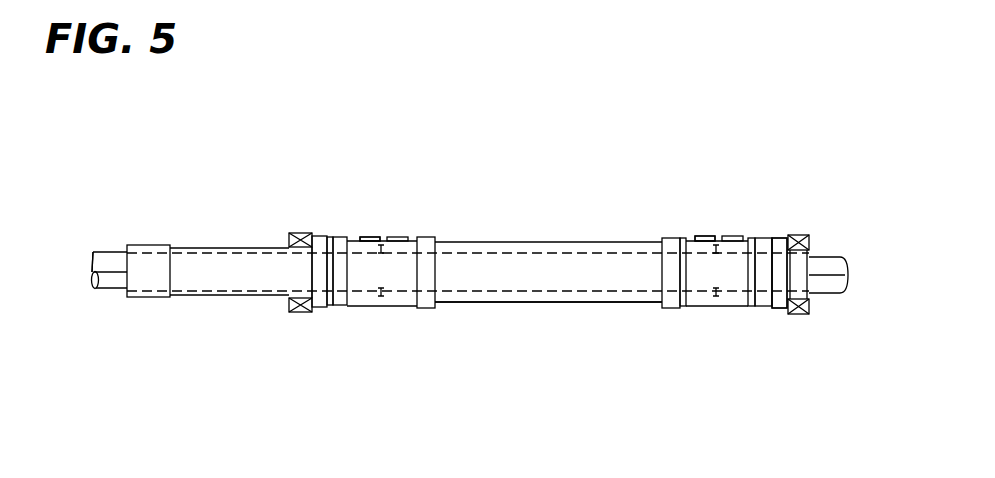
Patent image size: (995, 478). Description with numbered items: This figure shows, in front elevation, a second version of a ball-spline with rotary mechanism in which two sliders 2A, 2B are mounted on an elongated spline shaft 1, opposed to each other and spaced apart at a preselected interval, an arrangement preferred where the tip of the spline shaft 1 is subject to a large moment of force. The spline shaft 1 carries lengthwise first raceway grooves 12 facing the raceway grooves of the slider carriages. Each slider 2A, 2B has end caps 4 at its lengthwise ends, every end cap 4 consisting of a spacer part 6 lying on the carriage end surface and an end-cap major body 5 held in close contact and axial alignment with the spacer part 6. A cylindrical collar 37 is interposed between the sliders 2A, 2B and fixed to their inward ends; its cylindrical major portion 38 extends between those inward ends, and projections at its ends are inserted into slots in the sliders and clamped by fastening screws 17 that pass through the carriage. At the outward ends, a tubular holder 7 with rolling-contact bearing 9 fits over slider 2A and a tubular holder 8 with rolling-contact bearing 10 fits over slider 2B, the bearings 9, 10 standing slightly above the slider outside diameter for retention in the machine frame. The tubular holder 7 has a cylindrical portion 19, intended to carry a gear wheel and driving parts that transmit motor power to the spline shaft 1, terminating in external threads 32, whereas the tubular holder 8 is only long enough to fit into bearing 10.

The spline shaft 1 is at (112, 283).
The slider 2A is at (383, 237).
The slider 2B is at (745, 237).
The end cap 4 is at (428, 237).
The end-cap major body 5 is at (333, 255).
The spacer part 6 is at (346, 262).
The tubular holder 7 is at (320, 267).
The tubular holder 8 is at (775, 283).
The rolling-contact bearing 9 is at (298, 313).
The rolling-contact bearing 10 is at (797, 314).
The first raceway groove 12 is at (112, 270).
The fastening screw 17 is at (397, 237).
The cylindrical portion 19 is at (210, 297).
The external threads 32 is at (153, 246).
The cylindrical collar 37 is at (542, 243).
The cylindrical major portion 38 is at (555, 297).